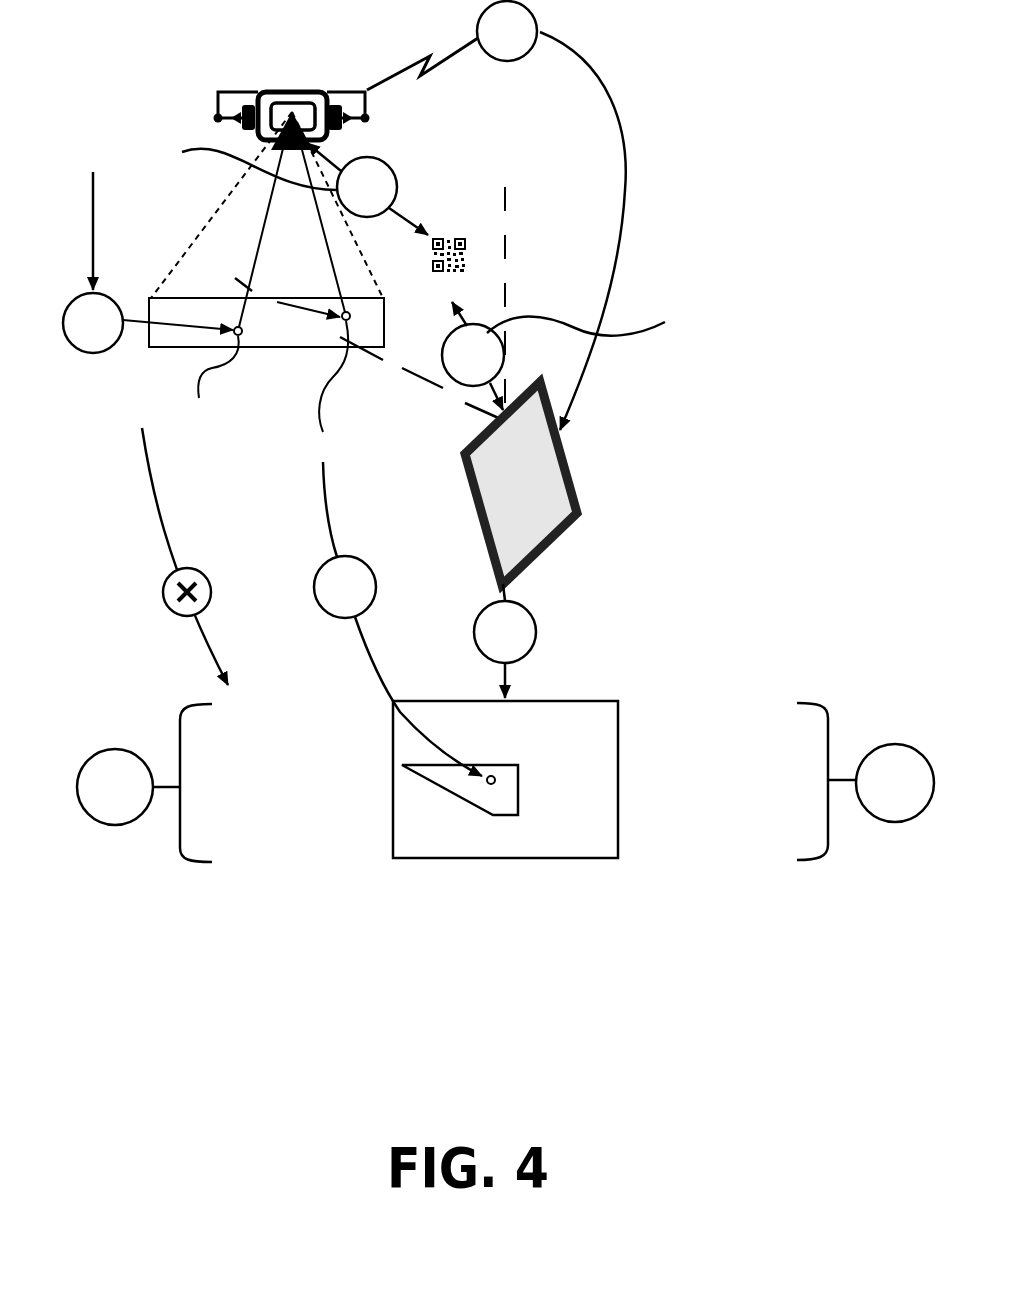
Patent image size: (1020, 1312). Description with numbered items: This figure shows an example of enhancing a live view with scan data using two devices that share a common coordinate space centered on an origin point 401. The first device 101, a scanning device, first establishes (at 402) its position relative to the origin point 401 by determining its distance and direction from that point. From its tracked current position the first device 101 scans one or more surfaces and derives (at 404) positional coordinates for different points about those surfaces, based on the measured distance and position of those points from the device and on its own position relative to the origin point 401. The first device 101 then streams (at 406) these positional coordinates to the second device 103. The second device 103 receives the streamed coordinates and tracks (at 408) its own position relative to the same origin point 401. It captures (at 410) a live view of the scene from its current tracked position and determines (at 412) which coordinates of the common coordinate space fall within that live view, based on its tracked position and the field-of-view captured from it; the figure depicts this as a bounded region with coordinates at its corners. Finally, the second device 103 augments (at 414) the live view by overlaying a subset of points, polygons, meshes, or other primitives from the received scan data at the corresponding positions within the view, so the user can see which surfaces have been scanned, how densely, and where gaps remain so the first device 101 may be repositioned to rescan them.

The first device 101 is at (293, 92).
The second device 103 is at (521, 483).
The origin point 401 is at (447, 238).
The establishing position relative to origin point 402 is at (222, 189).
The deriving positional coordinates 404 is at (148, 262).
The streaming positional coordinates 406 is at (496, 215).
The tracking position relative to origin point 408 is at (637, 356).
The capturing live view 410 is at (505, 641).
The determining coordinates within live view 412 is at (505, 781).
The augmenting live view 414 is at (380, 643).